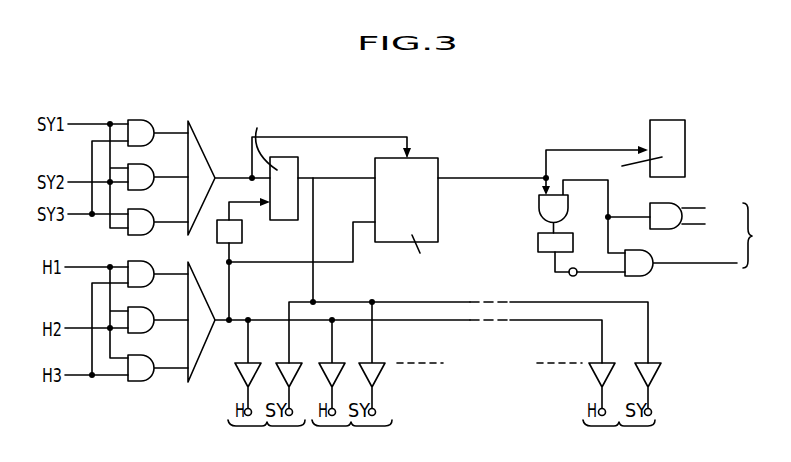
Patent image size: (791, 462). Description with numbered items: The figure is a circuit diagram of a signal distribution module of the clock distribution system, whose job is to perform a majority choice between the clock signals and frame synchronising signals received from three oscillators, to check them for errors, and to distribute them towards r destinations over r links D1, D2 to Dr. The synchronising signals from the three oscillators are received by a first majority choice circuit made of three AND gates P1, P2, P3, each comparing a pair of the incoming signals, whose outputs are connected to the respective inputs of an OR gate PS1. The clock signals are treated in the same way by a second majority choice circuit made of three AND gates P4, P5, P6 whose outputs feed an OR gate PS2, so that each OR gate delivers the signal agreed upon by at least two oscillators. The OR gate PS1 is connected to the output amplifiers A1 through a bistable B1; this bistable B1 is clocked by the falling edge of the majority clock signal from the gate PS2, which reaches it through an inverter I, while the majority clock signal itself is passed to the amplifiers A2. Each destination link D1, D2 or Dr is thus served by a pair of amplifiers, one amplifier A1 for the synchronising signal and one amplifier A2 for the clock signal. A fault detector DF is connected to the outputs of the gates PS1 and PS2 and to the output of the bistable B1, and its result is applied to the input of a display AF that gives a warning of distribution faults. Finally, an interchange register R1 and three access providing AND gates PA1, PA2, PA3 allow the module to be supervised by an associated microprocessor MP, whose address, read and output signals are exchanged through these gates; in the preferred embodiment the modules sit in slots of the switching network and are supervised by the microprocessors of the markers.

The AND gate P1 is at (142, 118).
The AND gate P2 is at (150, 167).
The AND gate P3 is at (143, 226).
The AND gate P4 is at (145, 263).
The AND gate P5 is at (147, 312).
The AND gate P6 is at (143, 368).
The OR gate PS1 is at (197, 147).
The OR gate PS2 is at (197, 340).
The bistable B1 is at (287, 172).
The inverter I is at (235, 232).
The fault detector DF is at (413, 167).
The display AF is at (653, 145).
The access providing AND gate PA1 is at (548, 202).
The access providing AND gate PA2 is at (653, 208).
The access providing AND gate PA3 is at (642, 272).
The interchange register R1 is at (538, 243).
The microprocessor MP is at (759, 235).
The amplifier A1 is at (287, 367).
The amplifier A2 is at (243, 365).
The link D1 is at (266, 436).
The link D2 is at (352, 436).
The link Dr is at (619, 436).